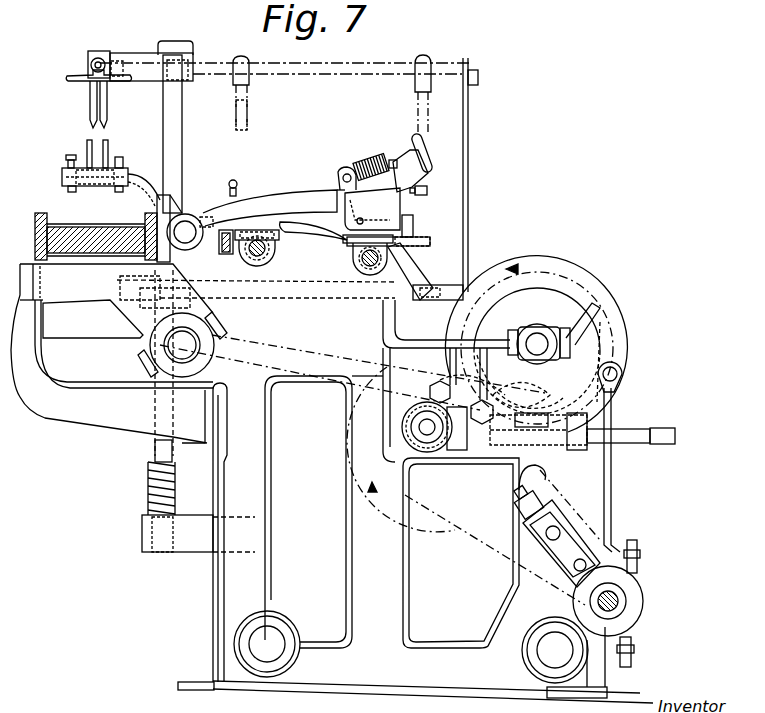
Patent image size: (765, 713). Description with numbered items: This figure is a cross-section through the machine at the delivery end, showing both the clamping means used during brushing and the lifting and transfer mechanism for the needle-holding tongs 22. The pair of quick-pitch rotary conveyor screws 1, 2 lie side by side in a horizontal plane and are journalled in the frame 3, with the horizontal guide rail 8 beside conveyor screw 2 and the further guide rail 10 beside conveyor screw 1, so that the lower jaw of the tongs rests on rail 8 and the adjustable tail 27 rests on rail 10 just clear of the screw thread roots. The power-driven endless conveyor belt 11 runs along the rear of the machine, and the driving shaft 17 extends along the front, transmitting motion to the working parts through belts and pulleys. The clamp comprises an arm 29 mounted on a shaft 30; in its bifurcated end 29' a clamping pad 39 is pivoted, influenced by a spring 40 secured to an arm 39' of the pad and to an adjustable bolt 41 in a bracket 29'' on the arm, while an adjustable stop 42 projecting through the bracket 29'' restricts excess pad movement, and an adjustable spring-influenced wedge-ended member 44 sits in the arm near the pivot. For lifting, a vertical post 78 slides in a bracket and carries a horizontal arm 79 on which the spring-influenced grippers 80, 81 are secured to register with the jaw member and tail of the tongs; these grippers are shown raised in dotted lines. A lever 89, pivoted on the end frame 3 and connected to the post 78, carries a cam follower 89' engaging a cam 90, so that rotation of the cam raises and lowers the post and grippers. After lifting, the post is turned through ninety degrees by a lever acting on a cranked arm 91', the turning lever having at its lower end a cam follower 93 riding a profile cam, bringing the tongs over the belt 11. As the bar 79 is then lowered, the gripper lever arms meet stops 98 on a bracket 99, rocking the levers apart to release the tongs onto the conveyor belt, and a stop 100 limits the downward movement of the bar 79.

The conveyor screw 1 is at (267, 258).
The conveyor screw 2 is at (355, 259).
The frame 3 is at (415, 525).
The guide rail 8 is at (446, 321).
The guide rail 10 is at (227, 254).
The conveyor belt 11 is at (82, 228).
The shaft 17 is at (620, 593).
The tongs 22 is at (328, 232).
The extension or tail 27 is at (252, 243).
The arm 29 is at (274, 208).
The bifurcated end 29' is at (372, 209).
The bracket 29'' is at (425, 162).
The shaft 30 is at (186, 226).
The clamping pad 39 is at (396, 230).
The arm of the pad 39' is at (334, 178).
The spring 40 is at (366, 160).
The adjustable bolt 41 is at (393, 159).
The adjustable stop 42 is at (425, 194).
The spring-influenced member 44 is at (236, 186).
The vertical post 78 is at (183, 150).
The horizontal arm 79 is at (213, 65).
The gripper 80 is at (418, 112).
The gripper 81 is at (250, 100).
The lever 89 is at (386, 434).
The cam follower 89' is at (520, 365).
The cam 90 is at (598, 418).
The cranked arm 91' is at (203, 360).
The cam follower 93 is at (68, 164).
The stop 98 is at (121, 162).
The bracket 99 is at (92, 186).
The stop 100 is at (468, 152).